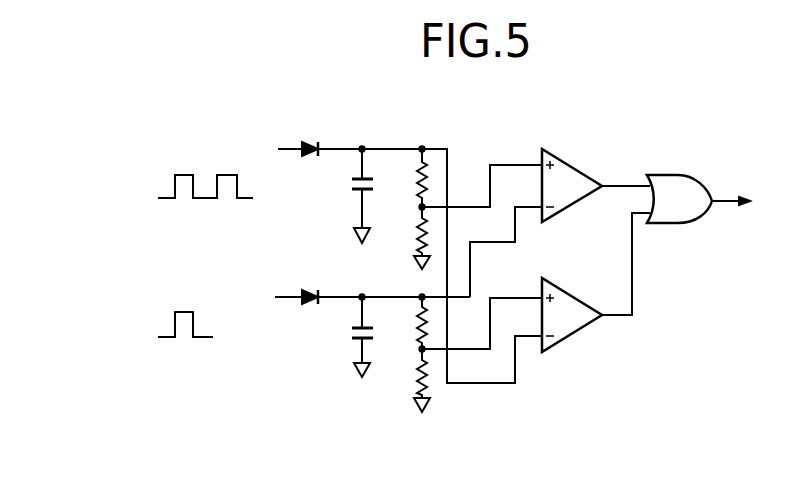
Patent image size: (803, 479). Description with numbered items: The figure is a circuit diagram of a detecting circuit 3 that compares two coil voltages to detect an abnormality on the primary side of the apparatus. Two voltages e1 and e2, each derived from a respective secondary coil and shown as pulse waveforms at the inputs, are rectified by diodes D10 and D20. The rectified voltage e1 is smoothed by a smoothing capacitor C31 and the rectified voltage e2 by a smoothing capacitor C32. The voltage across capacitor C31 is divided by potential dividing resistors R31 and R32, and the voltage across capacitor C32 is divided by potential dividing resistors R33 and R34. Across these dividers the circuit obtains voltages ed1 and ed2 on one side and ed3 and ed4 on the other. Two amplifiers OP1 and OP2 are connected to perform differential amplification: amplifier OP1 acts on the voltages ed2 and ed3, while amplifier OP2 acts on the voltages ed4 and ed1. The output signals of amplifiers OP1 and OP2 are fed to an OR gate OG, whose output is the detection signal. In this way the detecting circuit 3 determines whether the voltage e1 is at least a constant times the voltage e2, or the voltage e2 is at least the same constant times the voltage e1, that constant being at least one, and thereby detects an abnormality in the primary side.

The voltage e1 is at (265, 148).
The voltage e2 is at (265, 296).
The diode D10 is at (313, 137).
The diode D20 is at (308, 286).
The smoothing capacitor C31 is at (346, 196).
The smoothing capacitor C32 is at (344, 337).
The potential dividing resistor R31 is at (406, 178).
The potential dividing resistor R32 is at (407, 238).
The potential dividing resistor R33 is at (405, 323).
The potential dividing resistor R34 is at (407, 380).
The voltage ed1 is at (439, 139).
The voltage ed2 is at (469, 197).
The voltage ed3 is at (423, 282).
The voltage ed4 is at (468, 372).
The amplifier OP1 is at (573, 173).
The amplifier OP2 is at (568, 320).
The OR gate OG is at (682, 188).
The detecting circuit 3 is at (595, 430).